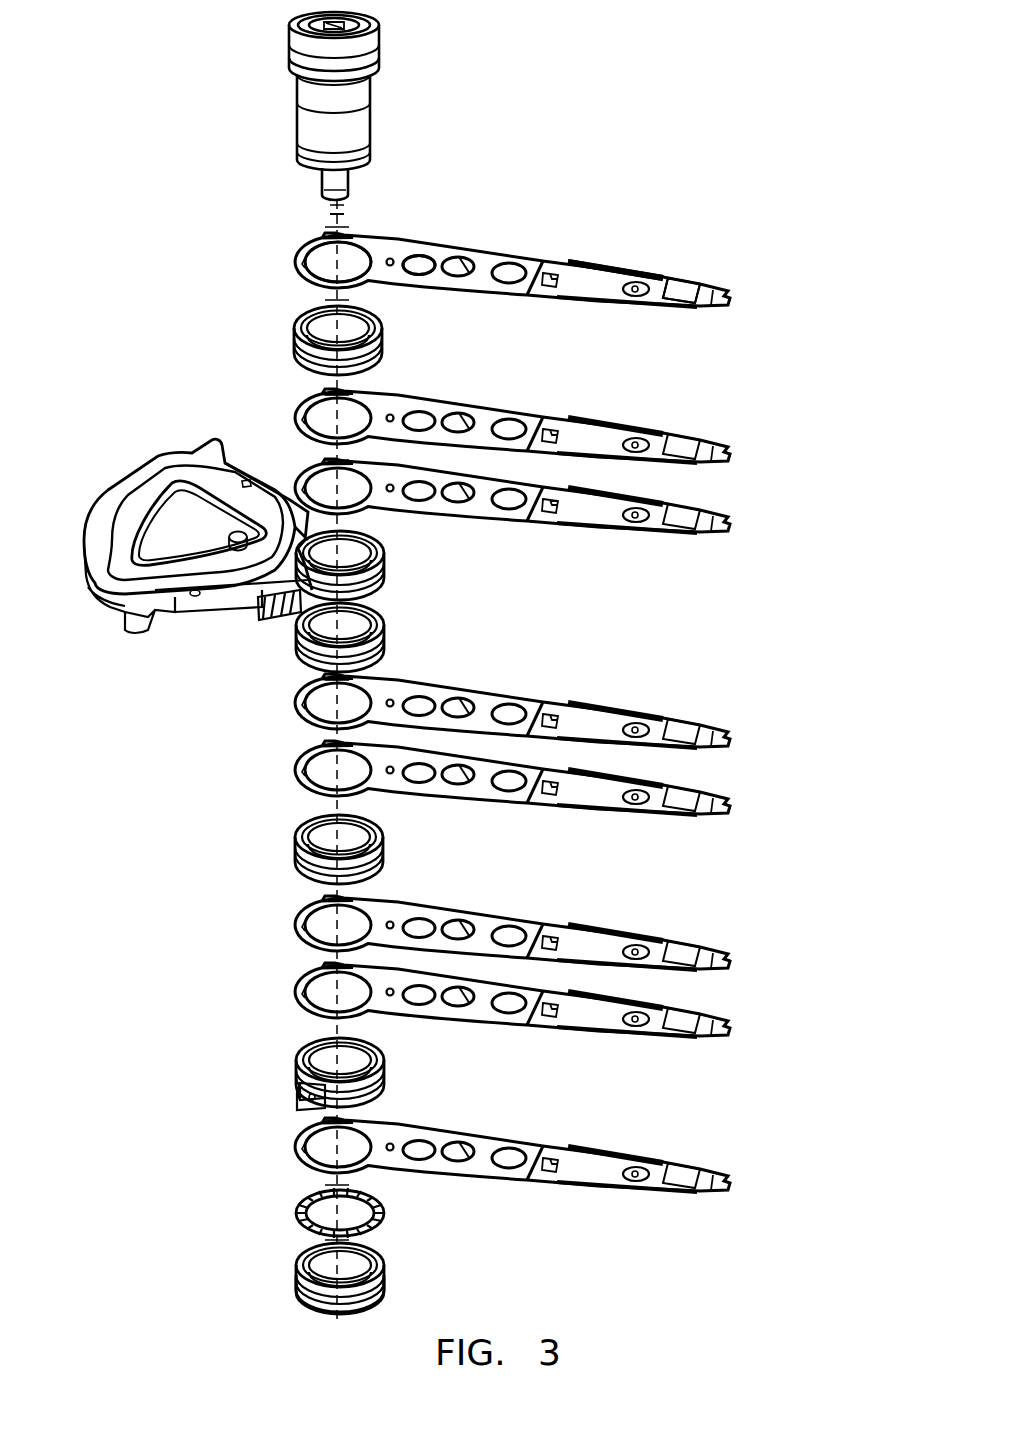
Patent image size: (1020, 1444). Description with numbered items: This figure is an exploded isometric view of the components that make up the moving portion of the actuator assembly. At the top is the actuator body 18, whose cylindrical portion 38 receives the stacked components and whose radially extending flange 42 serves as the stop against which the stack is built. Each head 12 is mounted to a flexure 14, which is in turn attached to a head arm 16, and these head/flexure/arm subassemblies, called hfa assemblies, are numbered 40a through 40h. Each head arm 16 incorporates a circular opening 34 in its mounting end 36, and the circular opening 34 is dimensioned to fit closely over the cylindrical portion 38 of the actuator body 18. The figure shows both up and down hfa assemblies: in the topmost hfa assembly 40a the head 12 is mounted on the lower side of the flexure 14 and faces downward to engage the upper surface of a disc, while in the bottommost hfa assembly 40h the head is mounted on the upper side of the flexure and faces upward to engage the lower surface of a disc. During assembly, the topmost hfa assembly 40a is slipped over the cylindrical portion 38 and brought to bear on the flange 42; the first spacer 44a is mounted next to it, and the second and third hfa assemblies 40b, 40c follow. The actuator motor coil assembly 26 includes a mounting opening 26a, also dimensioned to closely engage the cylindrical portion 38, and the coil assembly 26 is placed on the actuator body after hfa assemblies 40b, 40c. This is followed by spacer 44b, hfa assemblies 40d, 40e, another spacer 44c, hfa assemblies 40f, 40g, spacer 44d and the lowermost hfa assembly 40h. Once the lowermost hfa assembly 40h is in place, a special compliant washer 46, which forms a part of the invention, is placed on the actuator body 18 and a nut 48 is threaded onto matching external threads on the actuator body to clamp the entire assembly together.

The head 12 is at (692, 306).
The flexure 14 is at (578, 276).
The head arm 16 is at (447, 248).
The actuator body 18 is at (282, 107).
The actuator motor coil assembly 26 is at (100, 492).
The mounting opening 26a is at (258, 612).
The circular opening 34 is at (300, 252).
The mounting end 36 is at (410, 228).
The cylindrical portion 38 is at (372, 113).
The hfa assembly 40a is at (712, 272).
The hfa assembly 40b is at (712, 430).
The hfa assembly 40c is at (712, 500).
The hfa assembly 40d is at (712, 712).
The hfa assembly 40e is at (712, 784).
The hfa assembly 40f is at (712, 939).
The hfa assembly 40g is at (712, 1010).
The hfa assembly 40h is at (712, 1165).
The radially extending flange 42 is at (376, 32).
The spacer 44a is at (292, 347).
The spacer 44b is at (298, 647).
The spacer 44c is at (296, 855).
The spacer 44d is at (296, 1082).
The compliant washer 46 is at (292, 1214).
The nut 48 is at (292, 1286).